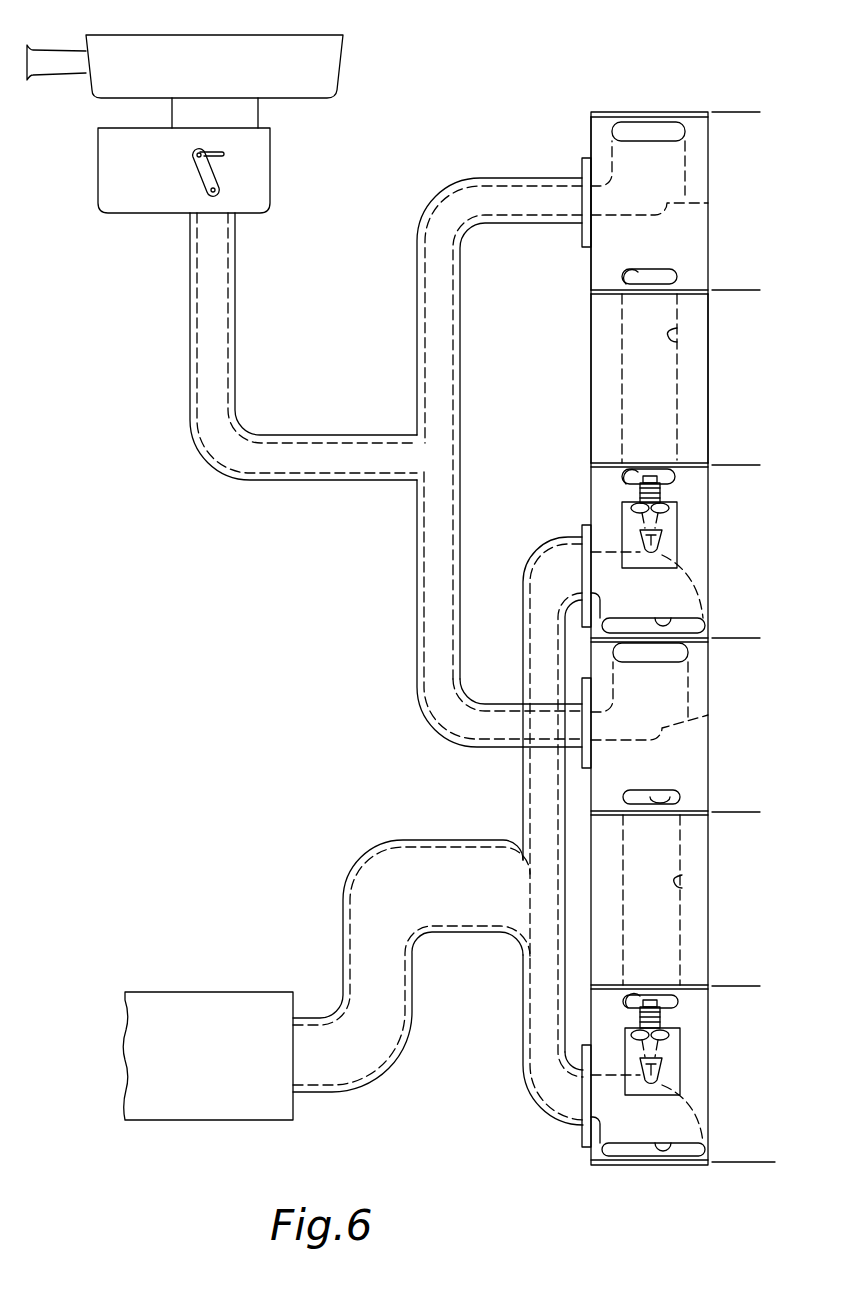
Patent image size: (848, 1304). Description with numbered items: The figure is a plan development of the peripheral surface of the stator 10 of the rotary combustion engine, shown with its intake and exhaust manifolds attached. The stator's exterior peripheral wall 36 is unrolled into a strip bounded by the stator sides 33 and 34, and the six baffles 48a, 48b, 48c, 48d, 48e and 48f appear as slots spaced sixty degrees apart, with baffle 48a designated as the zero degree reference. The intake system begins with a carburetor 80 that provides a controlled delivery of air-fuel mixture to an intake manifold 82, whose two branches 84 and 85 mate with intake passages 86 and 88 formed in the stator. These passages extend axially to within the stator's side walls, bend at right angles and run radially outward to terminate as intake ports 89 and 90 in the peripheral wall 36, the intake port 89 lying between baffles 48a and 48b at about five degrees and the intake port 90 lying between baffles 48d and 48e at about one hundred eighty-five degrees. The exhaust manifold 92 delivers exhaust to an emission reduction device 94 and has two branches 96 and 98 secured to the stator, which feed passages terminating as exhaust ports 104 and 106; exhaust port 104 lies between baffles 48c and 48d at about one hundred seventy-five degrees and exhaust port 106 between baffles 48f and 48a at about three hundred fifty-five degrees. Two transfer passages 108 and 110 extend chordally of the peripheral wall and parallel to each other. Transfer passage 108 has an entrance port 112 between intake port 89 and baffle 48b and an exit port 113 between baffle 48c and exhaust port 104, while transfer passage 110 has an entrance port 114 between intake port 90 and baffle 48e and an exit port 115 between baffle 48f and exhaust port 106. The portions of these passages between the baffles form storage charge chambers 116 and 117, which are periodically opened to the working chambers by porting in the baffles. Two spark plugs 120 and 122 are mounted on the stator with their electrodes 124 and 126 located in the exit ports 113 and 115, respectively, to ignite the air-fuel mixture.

The stator 10 is at (598, 103).
The stator side 33 is at (591, 380).
The stator side 34 is at (708, 372).
The exterior peripheral wall 36 is at (690, 227).
The baffle 48a is at (705, 638).
The baffle 48b is at (690, 811).
The baffle 48c is at (695, 985).
The baffle 48d is at (693, 110).
The baffle 48e is at (695, 287).
The baffle 48f is at (700, 462).
The carburetor 80 is at (252, 156).
The intake manifold 82 is at (322, 435).
The intake manifold branch 84 is at (486, 703).
The intake manifold branch 85 is at (506, 178).
The intake passage 86 is at (708, 715).
The intake passage 88 is at (708, 200).
The intake port 89 is at (668, 660).
The intake port 90 is at (650, 128).
The exhaust manifold 92 is at (445, 840).
The emission reduction device 94 is at (178, 1003).
The exhaust branch 96 is at (545, 1108).
The exhaust branch 98 is at (567, 550).
The exhaust port 104 is at (665, 1150).
The exhaust port 106 is at (668, 622).
The transfer passage 108 is at (684, 883).
The transfer passage 110 is at (683, 338).
The entrance port 112 is at (655, 797).
The exit port 113 is at (655, 1000).
The entrance port 114 is at (630, 276).
The exit port 115 is at (630, 470).
The storage charge chamber 116 is at (660, 842).
The storage charge chamber 117 is at (632, 313).
The spark plug 120 is at (650, 1052).
The spark plug 122 is at (650, 532).
The electrode 124 is at (657, 1004).
The electrode 126 is at (657, 481).